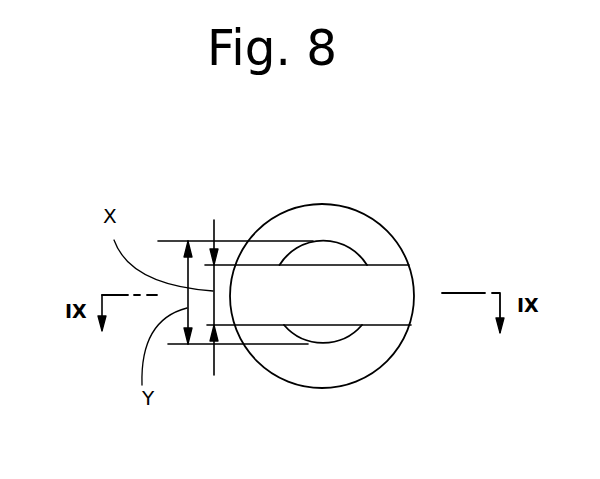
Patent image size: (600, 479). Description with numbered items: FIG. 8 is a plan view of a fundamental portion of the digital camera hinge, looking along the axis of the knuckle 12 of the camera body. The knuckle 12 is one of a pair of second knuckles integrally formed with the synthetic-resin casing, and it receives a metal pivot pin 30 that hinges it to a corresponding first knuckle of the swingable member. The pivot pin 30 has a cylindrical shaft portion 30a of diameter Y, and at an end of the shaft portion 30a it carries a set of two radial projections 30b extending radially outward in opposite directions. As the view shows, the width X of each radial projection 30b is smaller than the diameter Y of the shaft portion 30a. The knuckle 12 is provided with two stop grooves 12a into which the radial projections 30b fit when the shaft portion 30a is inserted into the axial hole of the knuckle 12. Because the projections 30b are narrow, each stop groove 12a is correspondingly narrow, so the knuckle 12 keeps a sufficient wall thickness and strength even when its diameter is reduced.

The second knuckle 12 is at (315, 205).
The stop groove 12a is at (264, 333).
The pivot pin 30 is at (291, 303).
The shaft portion 30a is at (327, 336).
The radial projection 30b is at (258, 285).